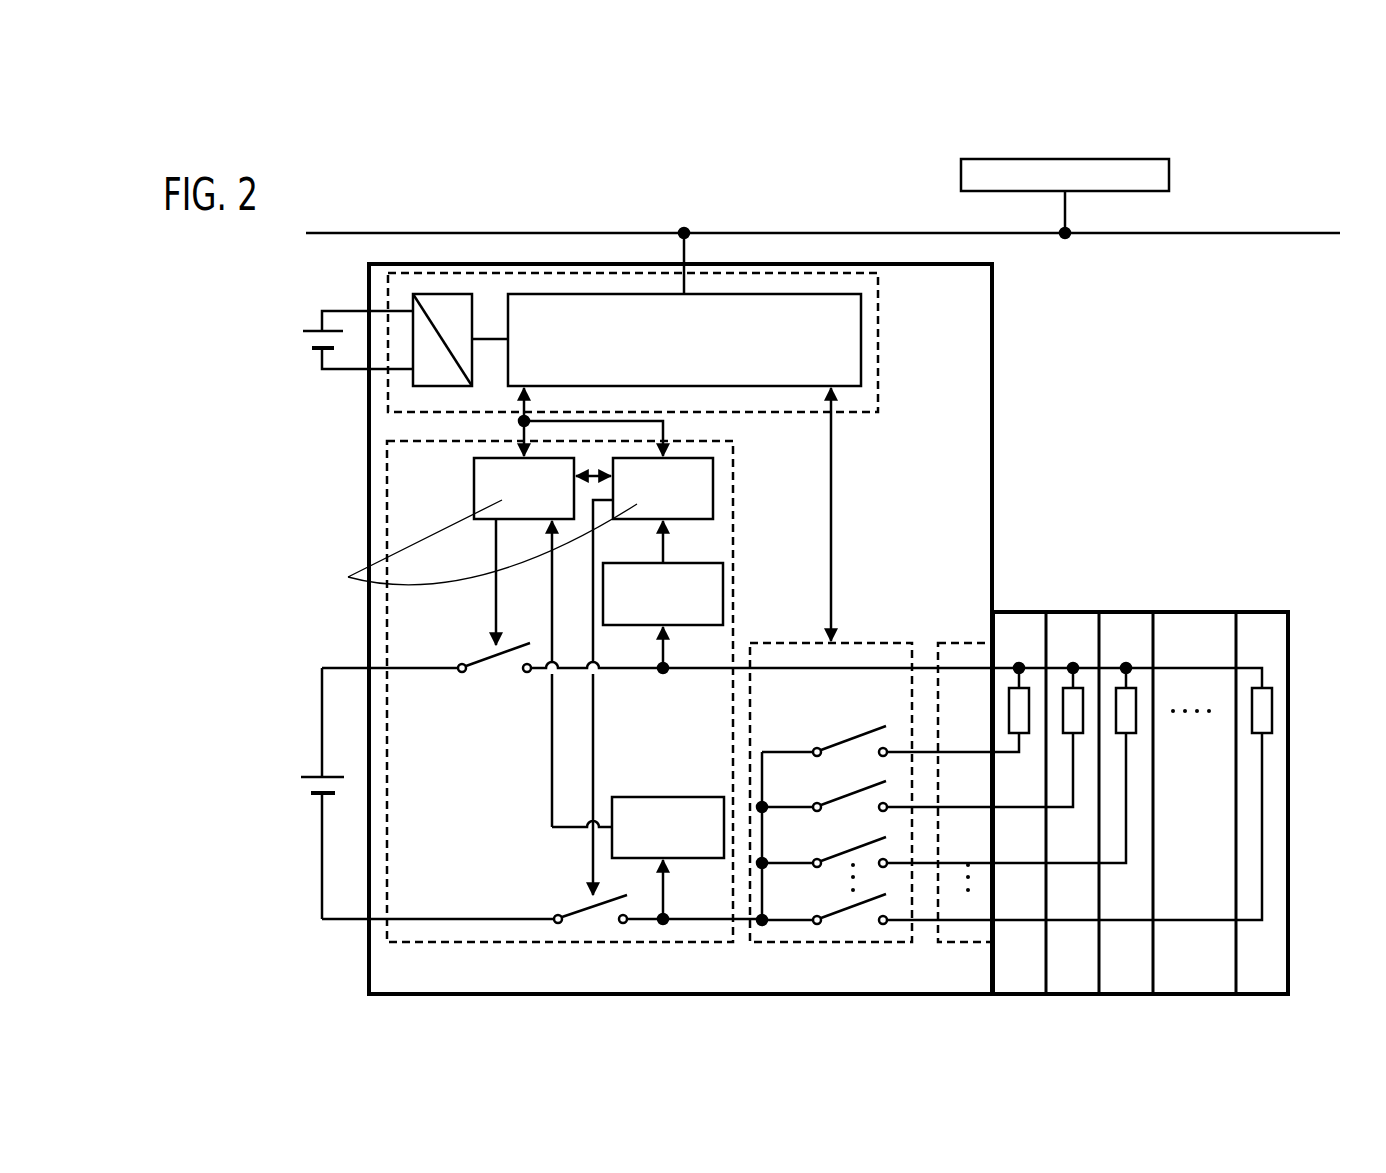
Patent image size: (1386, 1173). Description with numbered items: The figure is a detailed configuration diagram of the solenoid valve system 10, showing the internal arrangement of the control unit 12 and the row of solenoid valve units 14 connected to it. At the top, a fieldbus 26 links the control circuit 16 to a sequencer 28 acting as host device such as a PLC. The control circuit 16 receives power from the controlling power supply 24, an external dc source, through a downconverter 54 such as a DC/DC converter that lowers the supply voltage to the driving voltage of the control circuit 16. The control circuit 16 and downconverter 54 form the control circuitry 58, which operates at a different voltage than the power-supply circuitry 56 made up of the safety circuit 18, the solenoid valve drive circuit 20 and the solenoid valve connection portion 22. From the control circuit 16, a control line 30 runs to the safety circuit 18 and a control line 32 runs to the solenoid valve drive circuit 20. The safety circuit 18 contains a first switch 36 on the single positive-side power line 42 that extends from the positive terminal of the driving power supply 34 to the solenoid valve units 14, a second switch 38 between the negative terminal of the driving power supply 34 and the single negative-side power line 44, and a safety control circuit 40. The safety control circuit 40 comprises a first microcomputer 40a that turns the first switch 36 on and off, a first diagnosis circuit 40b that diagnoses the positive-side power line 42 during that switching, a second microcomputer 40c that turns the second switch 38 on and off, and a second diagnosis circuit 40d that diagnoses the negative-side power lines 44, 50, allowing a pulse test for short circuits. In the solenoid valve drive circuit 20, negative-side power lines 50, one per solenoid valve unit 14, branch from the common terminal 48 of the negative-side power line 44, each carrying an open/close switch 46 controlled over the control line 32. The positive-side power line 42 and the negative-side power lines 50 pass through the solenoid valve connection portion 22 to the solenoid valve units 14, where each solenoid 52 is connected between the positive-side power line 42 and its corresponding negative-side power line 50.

The solenoid valve system 10 is at (758, 178).
The control unit 12 is at (993, 316).
The solenoid valve unit 14 is at (1013, 612).
The control circuit 16 is at (862, 353).
The safety circuit 18 is at (633, 943).
The solenoid valve drive circuit 20 is at (865, 640).
The solenoid valve connection portion 22 is at (945, 640).
The controlling power supply 24 is at (315, 338).
The fieldbus 26 is at (835, 232).
The sequencer 28 is at (1171, 173).
The control line 30 is at (520, 428).
The control line 32 is at (833, 464).
The driving power supply 34 is at (305, 786).
The first switch 36 is at (497, 656).
The second switch 38 is at (594, 912).
The safety control circuit 40 is at (493, 688).
The first microcomputer 40a is at (474, 490).
The first diagnosis circuit 40b is at (727, 588).
The second microcomputer 40c is at (713, 490).
The second diagnosis circuit 40d is at (640, 797).
The positive-side power line 42 is at (780, 668).
The negative-side power line 44 is at (743, 922).
The open/close switch 46 is at (848, 738).
The common terminal 48 is at (765, 918).
The negative-side power line 50 is at (965, 750).
The solenoid 52 is at (1023, 737).
The downconverter 54 is at (423, 386).
The power-supply circuitry 56 is at (795, 950).
The control circuitry 58 is at (880, 311).